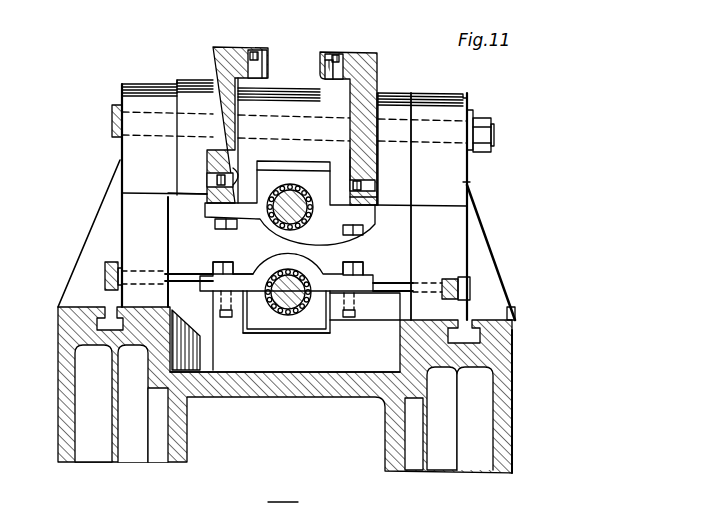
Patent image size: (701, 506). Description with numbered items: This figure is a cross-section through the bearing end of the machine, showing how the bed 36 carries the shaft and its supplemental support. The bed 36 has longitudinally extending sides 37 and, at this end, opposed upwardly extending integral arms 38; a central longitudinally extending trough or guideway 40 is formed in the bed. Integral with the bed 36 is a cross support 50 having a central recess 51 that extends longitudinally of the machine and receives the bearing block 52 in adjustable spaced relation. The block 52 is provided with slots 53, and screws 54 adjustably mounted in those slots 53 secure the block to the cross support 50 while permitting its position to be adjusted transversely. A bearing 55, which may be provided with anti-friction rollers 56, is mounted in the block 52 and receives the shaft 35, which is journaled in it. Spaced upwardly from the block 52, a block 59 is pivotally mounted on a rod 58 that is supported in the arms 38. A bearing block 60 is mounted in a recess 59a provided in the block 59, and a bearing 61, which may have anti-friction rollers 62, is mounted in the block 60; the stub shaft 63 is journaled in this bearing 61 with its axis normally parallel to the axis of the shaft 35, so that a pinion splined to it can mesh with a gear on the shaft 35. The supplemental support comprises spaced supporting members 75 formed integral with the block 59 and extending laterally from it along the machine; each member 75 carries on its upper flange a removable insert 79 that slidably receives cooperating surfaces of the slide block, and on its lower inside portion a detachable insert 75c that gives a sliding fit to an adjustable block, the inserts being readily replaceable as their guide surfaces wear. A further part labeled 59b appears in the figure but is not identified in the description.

The shaft 35 is at (303, 277).
The bed 36 is at (519, 407).
The longitudinally extending sides 37 is at (512, 430).
The upwardly extending integral arms 38 is at (458, 173).
The trough or guideway 40 is at (203, 398).
The cross support 50 is at (395, 308).
The central recess 51 is at (277, 333).
The bearing block 52 is at (317, 333).
The slots 53 is at (213, 273).
The screws 54 is at (226, 317).
The bearing 55 is at (272, 272).
The anti-friction rollers 56 is at (332, 322).
The rod 58 is at (493, 128).
The block 59 is at (270, 140).
The recess 59a is at (310, 166).
The clamp bolt nut 59b is at (512, 261).
The bearing block 60 is at (303, 168).
The bearing 61 is at (313, 206).
The anti-friction rollers 62 is at (352, 182).
The stub shaft 63 is at (377, 218).
The supporting members 75 is at (218, 128).
The inserts 75c is at (420, 195).
The removable insert 79 is at (265, 80).